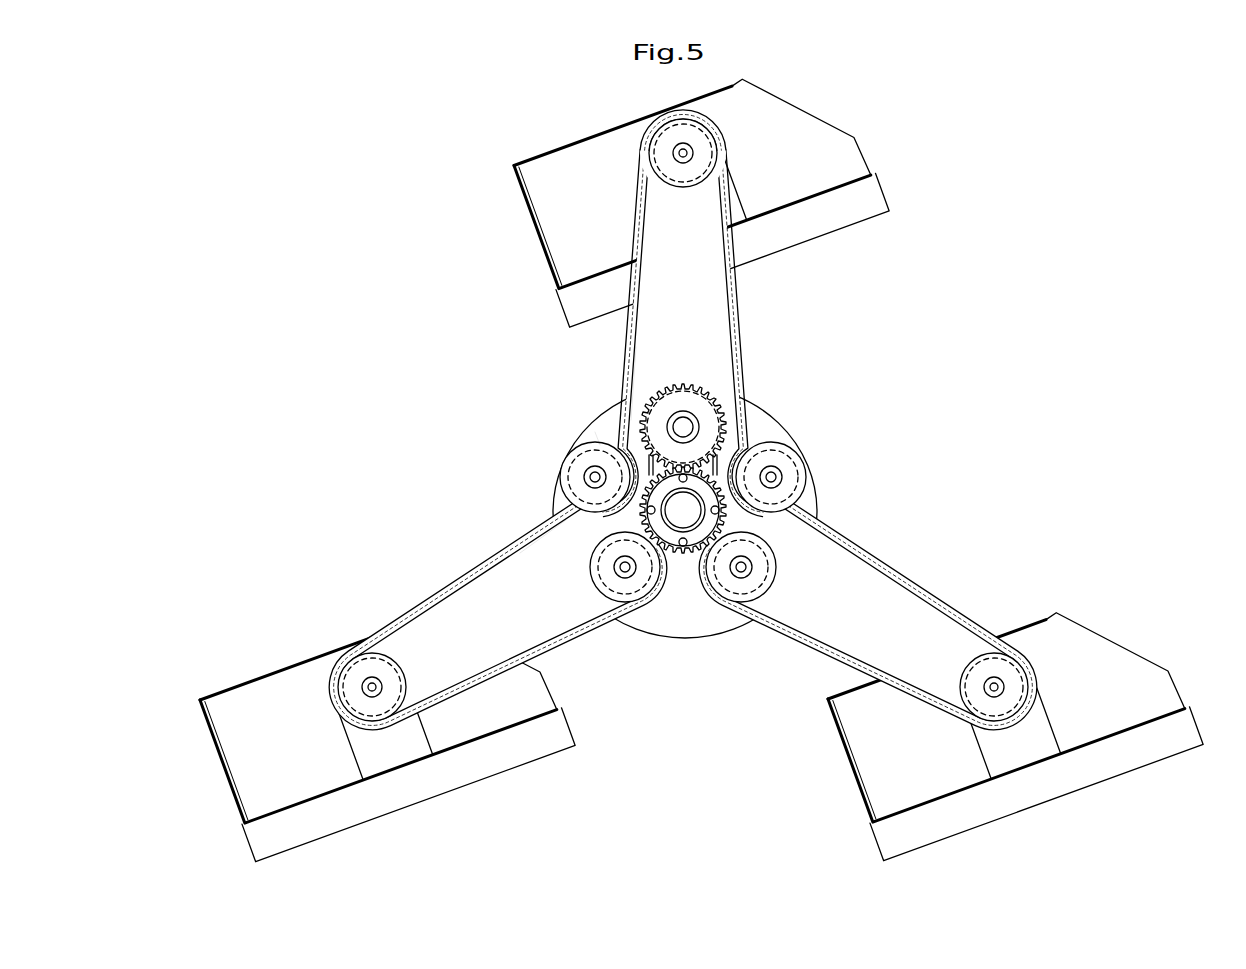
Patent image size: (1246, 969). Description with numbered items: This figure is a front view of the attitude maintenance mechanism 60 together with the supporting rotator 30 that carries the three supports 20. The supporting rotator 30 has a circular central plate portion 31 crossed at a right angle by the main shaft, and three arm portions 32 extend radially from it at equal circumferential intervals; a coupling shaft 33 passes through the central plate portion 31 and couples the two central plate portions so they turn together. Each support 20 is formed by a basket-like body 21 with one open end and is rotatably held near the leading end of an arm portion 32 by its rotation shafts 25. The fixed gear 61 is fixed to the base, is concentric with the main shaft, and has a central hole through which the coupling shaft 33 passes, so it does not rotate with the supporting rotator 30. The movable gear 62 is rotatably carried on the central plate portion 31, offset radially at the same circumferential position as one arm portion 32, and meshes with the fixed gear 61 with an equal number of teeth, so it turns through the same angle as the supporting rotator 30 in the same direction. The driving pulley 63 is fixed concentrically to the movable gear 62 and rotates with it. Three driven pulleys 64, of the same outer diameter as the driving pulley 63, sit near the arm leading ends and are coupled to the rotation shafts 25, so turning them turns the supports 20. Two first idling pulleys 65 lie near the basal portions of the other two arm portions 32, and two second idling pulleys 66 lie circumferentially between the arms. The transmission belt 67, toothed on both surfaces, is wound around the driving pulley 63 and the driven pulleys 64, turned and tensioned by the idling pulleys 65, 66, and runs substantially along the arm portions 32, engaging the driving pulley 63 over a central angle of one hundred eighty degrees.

The support 20 is at (656, 454).
The basket-like body 21 is at (511, 188).
The rotation shaft 25 is at (680, 151).
The supporting rotator 30 is at (534, 449).
The central plate portion 31 is at (593, 433).
The arm portion 32 is at (636, 347).
The coupling shaft 33 is at (688, 506).
The attitude maintenance mechanism 60 is at (719, 493).
The fixed gear 61 is at (683, 556).
The movable gear 62 is at (702, 405).
The driving pulley 63 is at (706, 382).
The driven pulley 64 is at (728, 132).
The first idling pulley 65 is at (650, 598).
The second idling pulley 66 is at (586, 508).
The transmission belt 67 is at (740, 292).